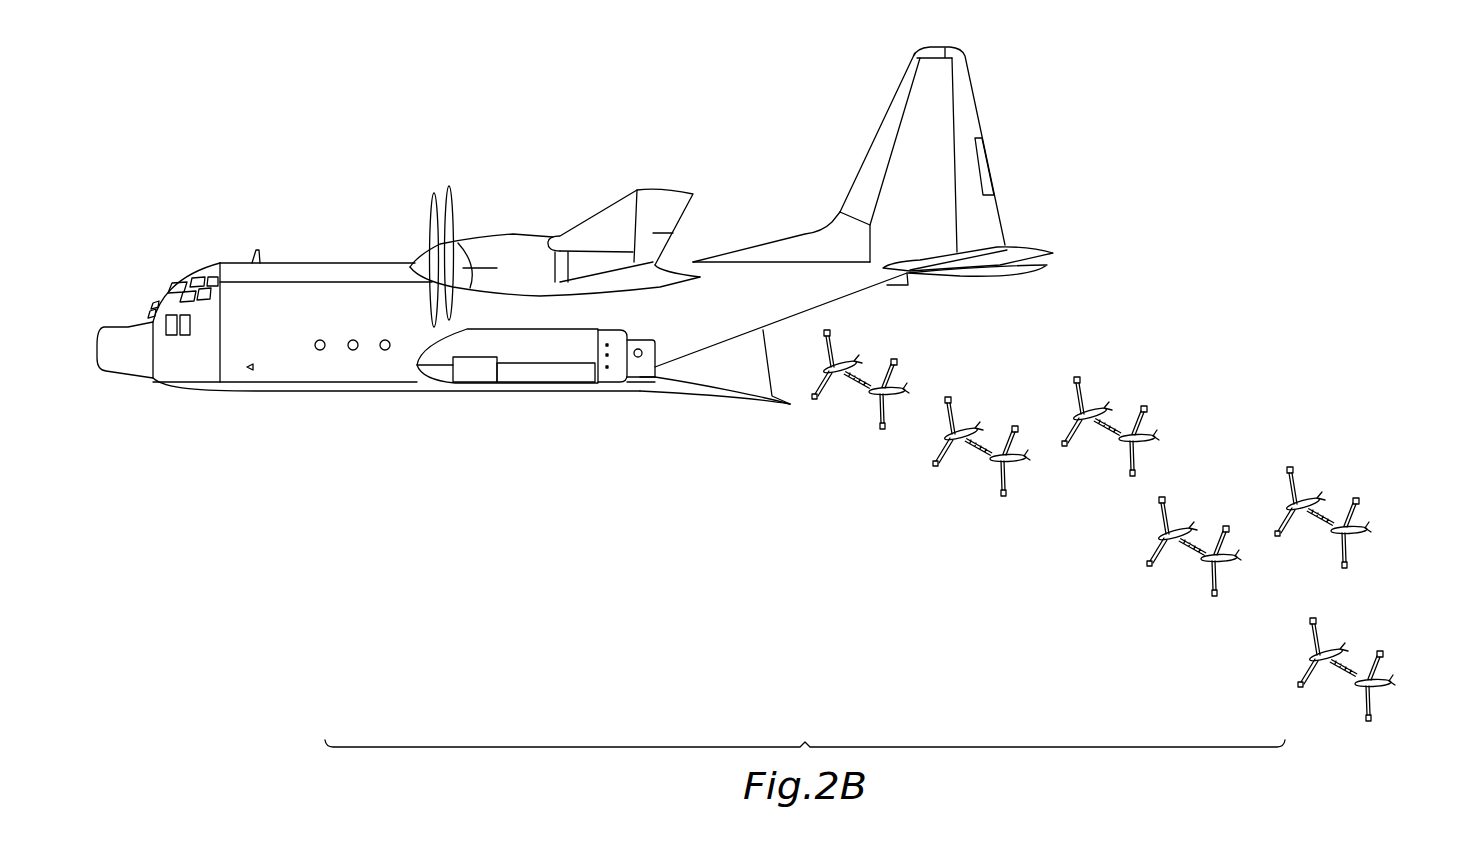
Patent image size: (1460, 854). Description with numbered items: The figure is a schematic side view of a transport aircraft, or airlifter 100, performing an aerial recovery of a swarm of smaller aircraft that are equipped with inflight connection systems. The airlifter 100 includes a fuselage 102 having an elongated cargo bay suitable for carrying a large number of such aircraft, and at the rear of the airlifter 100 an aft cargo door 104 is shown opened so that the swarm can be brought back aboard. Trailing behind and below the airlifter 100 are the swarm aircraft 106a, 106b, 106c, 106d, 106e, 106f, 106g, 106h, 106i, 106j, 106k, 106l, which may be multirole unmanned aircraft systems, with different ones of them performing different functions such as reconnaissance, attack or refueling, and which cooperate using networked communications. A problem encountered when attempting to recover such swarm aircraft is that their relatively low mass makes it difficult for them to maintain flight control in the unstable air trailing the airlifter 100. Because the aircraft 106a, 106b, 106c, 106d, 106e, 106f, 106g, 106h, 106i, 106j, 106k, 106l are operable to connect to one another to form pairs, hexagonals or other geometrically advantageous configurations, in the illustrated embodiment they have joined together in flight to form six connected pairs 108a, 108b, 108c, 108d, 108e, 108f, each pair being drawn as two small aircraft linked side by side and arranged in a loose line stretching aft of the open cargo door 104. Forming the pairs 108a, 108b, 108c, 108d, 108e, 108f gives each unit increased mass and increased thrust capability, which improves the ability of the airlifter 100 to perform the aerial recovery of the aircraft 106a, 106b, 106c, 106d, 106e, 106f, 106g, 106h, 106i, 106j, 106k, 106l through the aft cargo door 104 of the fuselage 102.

The airlifter 100 is at (348, 186).
The fuselage 102 is at (340, 376).
The aft cargo door 104 is at (712, 403).
The aircraft 106a is at (825, 392).
The aircraft 106b is at (878, 412).
The aircraft 106c is at (957, 412).
The aircraft 106d is at (1008, 443).
The aircraft 106e is at (1078, 436).
The aircraft 106f is at (1123, 466).
The aircraft 106g is at (1172, 517).
The aircraft 106h is at (1220, 545).
The aircraft 106i is at (1293, 521).
The aircraft 106j is at (1347, 553).
The aircraft 106k is at (1320, 678).
The aircraft 106l is at (1372, 703).
The pair 108a is at (885, 375).
The pair 108b is at (998, 483).
The pair 108c is at (1133, 428).
The pair 108d is at (1163, 553).
The pair 108e is at (1303, 487).
The pair 108f is at (1328, 642).